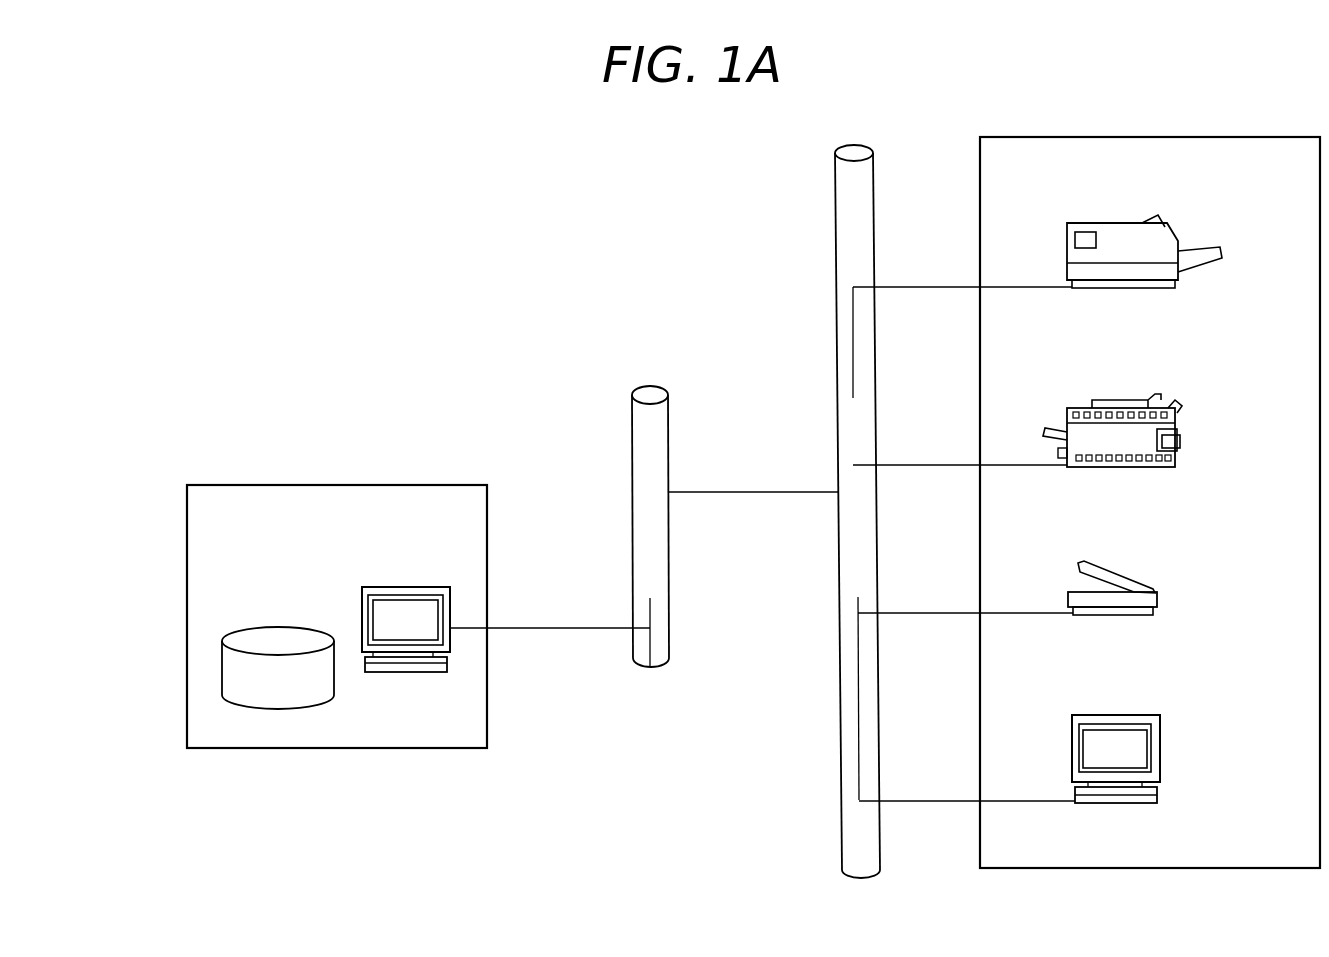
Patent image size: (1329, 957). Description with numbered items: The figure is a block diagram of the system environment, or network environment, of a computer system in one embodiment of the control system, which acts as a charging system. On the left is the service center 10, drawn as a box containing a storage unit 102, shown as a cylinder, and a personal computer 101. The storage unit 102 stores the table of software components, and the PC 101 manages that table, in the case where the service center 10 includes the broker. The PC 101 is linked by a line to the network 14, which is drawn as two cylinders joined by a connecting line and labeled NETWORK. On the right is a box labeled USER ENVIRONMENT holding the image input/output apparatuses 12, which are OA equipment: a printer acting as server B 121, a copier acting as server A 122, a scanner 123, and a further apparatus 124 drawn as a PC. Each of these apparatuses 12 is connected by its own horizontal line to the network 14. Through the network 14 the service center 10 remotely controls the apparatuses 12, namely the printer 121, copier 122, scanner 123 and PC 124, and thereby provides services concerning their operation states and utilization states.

The service center 10 is at (432, 749).
The image input/output apparatuses 12 is at (1057, 869).
The network 14 is at (872, 639).
The personal computer 101 is at (427, 587).
The storage unit 102 is at (293, 708).
The printer (server B) 121 is at (1175, 289).
The copier (server A) 122 is at (1175, 462).
The scanner 123 is at (1158, 606).
The image input/output apparatus 124 is at (1160, 748).